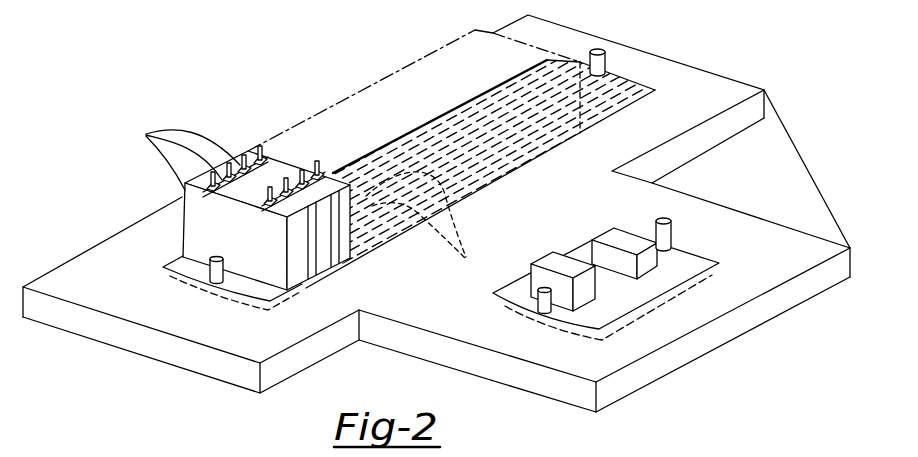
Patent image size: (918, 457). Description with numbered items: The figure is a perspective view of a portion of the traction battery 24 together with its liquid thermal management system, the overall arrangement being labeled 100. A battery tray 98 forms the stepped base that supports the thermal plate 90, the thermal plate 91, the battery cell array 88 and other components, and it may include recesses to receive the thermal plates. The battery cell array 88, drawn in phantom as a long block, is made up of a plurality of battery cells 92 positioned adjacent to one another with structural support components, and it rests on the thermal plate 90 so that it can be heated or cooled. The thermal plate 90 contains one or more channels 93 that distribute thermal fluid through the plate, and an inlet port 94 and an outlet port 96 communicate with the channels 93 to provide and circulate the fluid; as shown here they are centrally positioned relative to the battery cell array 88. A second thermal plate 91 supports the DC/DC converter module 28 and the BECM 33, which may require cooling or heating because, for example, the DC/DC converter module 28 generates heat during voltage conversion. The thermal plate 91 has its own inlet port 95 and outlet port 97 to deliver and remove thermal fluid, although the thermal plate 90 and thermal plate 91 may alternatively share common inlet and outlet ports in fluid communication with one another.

The assembly 100 is at (436, 234).
The battery tray 98 is at (699, 82).
The battery cell array 88 is at (458, 146).
The traction battery 24 is at (311, 85).
The battery cells 92 is at (235, 206).
The channels 93 is at (450, 254).
The thermal plate 90 is at (266, 286).
The thermal plate 91 is at (625, 296).
The inlet port 94 is at (605, 57).
The inlet port 95 is at (666, 220).
The outlet port 96 is at (224, 276).
The outlet port 97 is at (538, 300).
The DC/DC converter module 28 is at (538, 258).
The BECM 33 is at (615, 228).